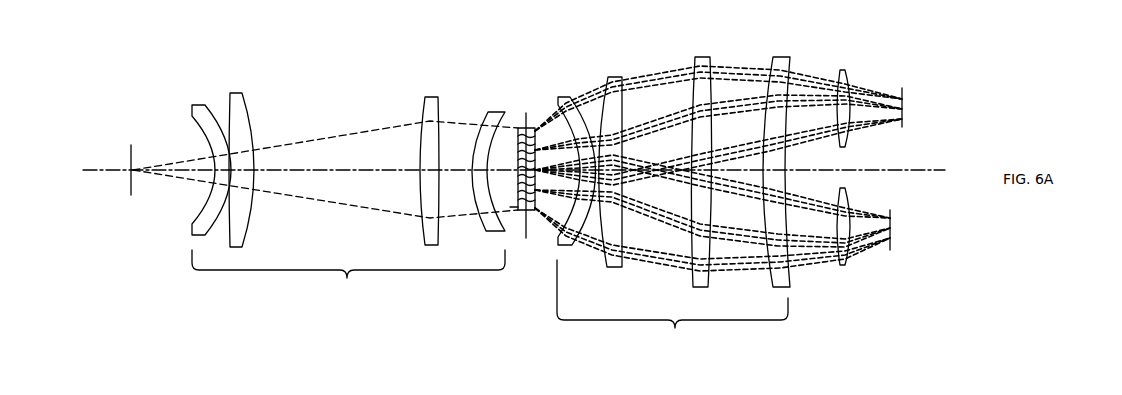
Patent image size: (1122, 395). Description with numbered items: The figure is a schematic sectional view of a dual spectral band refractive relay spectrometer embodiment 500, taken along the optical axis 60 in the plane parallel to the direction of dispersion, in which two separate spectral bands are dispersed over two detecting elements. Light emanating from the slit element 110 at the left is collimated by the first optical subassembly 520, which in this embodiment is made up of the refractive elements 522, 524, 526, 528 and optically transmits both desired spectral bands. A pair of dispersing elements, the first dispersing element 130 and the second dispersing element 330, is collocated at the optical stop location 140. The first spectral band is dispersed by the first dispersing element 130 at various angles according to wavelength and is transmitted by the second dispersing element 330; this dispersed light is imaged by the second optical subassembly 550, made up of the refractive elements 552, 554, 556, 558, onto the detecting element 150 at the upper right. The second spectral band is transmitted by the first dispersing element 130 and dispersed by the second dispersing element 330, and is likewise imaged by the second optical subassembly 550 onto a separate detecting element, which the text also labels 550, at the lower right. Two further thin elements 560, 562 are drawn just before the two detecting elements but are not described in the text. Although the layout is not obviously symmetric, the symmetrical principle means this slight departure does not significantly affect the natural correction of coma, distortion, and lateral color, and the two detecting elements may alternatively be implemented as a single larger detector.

The dual spectral band refractive relay spectrometer embodiment 500 is at (166, 40).
The optical axis 60 is at (106, 176).
The slit element 110 is at (130, 145).
The first dispersing element 130 is at (510, 207).
The optical stop location 140 is at (527, 108).
The detecting element 150 is at (903, 88).
The second dispersing element 330 is at (548, 195).
The first optical subassembly 520 is at (342, 183).
The refractive element 522 is at (197, 104).
The refractive element 524 is at (238, 93).
The refractive element 526 is at (431, 97).
The refractive element 528 is at (499, 112).
The second optical subassembly 550 is at (892, 252).
The refractive element 552 is at (563, 97).
The refractive element 554 is at (612, 77).
The refractive element 556 is at (702, 57).
The refractive element 558 is at (781, 57).
The lens element 560 is at (838, 74).
The lens element 562 is at (842, 265).